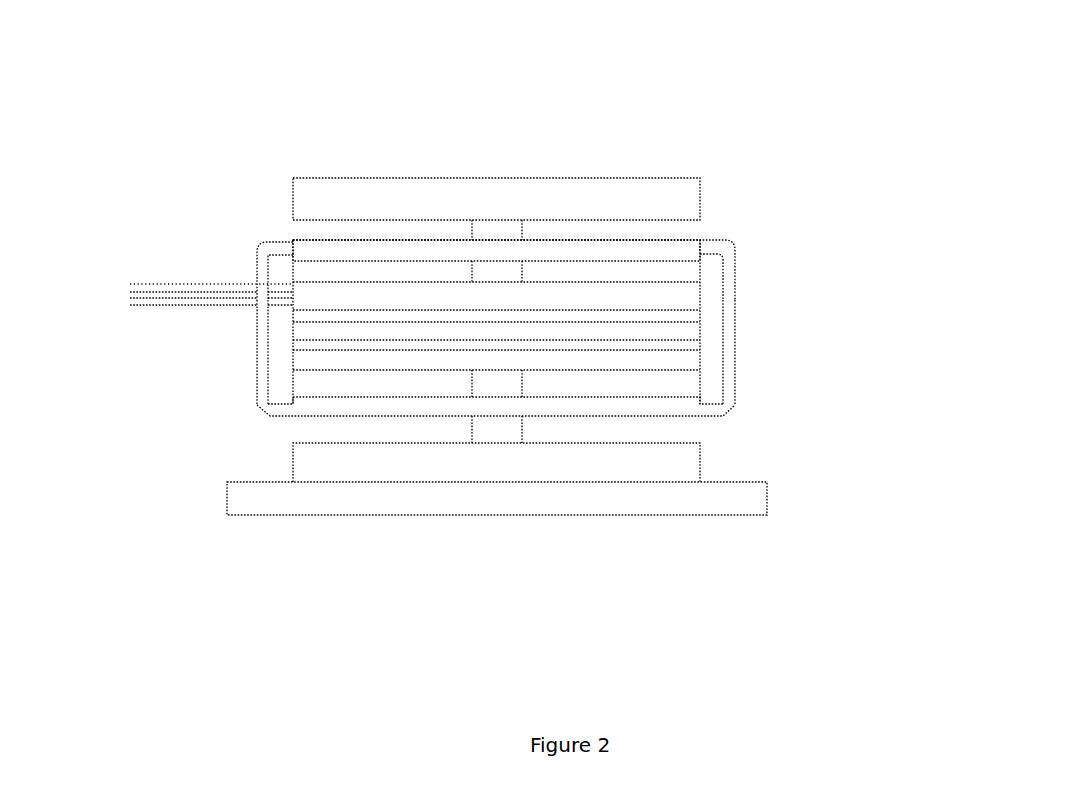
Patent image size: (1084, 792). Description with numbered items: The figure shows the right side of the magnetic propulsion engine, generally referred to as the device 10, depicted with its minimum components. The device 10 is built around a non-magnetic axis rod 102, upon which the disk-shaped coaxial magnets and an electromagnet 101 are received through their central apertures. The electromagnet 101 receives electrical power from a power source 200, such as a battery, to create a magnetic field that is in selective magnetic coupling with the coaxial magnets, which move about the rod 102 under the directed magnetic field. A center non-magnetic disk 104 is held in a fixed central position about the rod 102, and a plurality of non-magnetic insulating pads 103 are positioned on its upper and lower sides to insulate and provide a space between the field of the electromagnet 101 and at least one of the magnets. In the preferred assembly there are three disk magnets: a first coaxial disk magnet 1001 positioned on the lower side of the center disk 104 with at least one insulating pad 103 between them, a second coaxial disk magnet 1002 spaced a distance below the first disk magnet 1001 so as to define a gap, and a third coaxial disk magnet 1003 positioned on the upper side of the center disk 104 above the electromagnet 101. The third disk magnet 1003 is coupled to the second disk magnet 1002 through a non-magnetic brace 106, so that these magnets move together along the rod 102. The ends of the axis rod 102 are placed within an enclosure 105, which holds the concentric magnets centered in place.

The device 10 is at (326, 114).
The enclosure 105 is at (697, 205).
The non-magnetic brace 106 is at (578, 256).
The electromagnet 101 is at (682, 295).
The center non-magnetic disk 104 is at (690, 330).
The non-magnetic insulating pads 103 is at (297, 315).
The non-magnetic axis rod 102 is at (513, 385).
The power source 200 is at (217, 285).
The first coaxial disk magnet 1001 is at (312, 360).
The second coaxial disk magnet 1002 is at (340, 405).
The third coaxial disk magnet 1003 is at (317, 246).